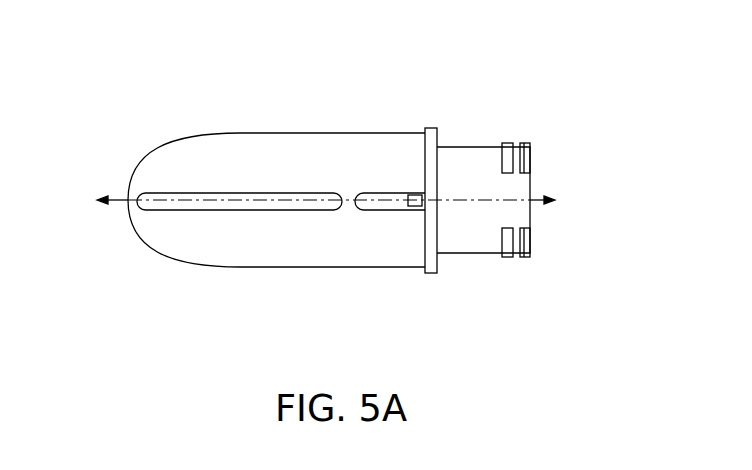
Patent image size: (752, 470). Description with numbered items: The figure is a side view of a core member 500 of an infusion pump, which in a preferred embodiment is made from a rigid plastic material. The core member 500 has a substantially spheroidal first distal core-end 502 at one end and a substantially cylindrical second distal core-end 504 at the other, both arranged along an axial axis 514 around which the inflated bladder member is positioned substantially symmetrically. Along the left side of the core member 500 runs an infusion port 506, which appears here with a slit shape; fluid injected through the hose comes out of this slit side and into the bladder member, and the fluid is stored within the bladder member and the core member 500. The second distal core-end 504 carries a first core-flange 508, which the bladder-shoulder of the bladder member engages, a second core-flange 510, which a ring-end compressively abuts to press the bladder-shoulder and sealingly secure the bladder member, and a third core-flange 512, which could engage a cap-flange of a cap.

The core member 500 is at (165, 68).
The first distal core-end 502 is at (165, 251).
The second distal core-end 504 is at (484, 146).
The infusion port 506 is at (375, 211).
The first core-flange 508 is at (428, 127).
The second core-flange 510 is at (510, 258).
The third core-flange 512 is at (533, 257).
The axial axis 514 is at (103, 195).